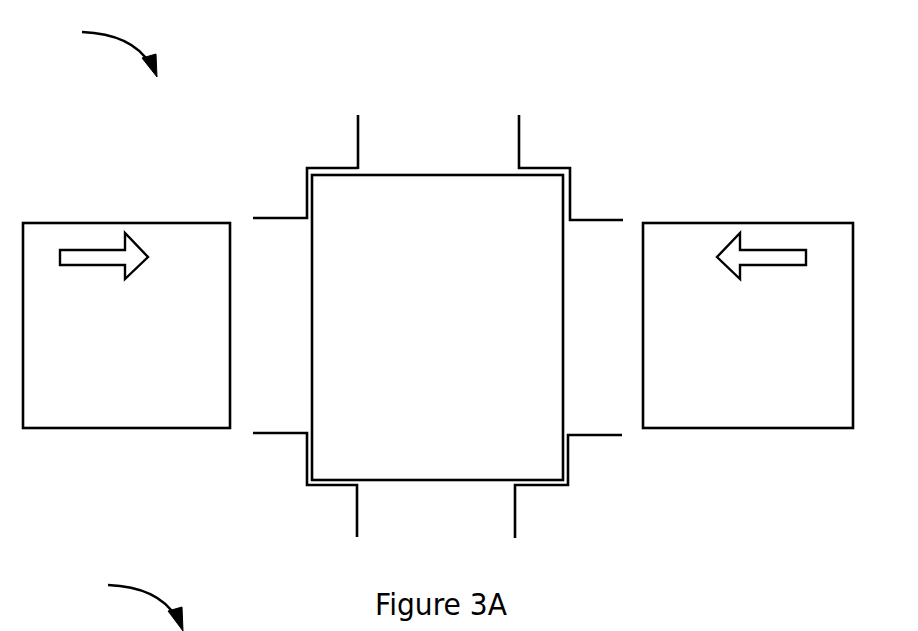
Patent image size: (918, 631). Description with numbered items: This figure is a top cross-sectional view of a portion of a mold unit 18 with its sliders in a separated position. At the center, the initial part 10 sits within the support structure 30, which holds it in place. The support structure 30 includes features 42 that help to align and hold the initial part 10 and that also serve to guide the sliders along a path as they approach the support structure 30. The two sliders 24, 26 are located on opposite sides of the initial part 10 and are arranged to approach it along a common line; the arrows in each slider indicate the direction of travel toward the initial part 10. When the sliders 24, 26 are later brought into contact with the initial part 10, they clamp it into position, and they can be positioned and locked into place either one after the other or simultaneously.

The initial part 10 is at (449, 338).
The mold unit 18 is at (120, 325).
The slider 24 is at (760, 338).
The slider 26 is at (138, 338).
The support structure 30 is at (300, 175).
The feature 42 is at (356, 125).